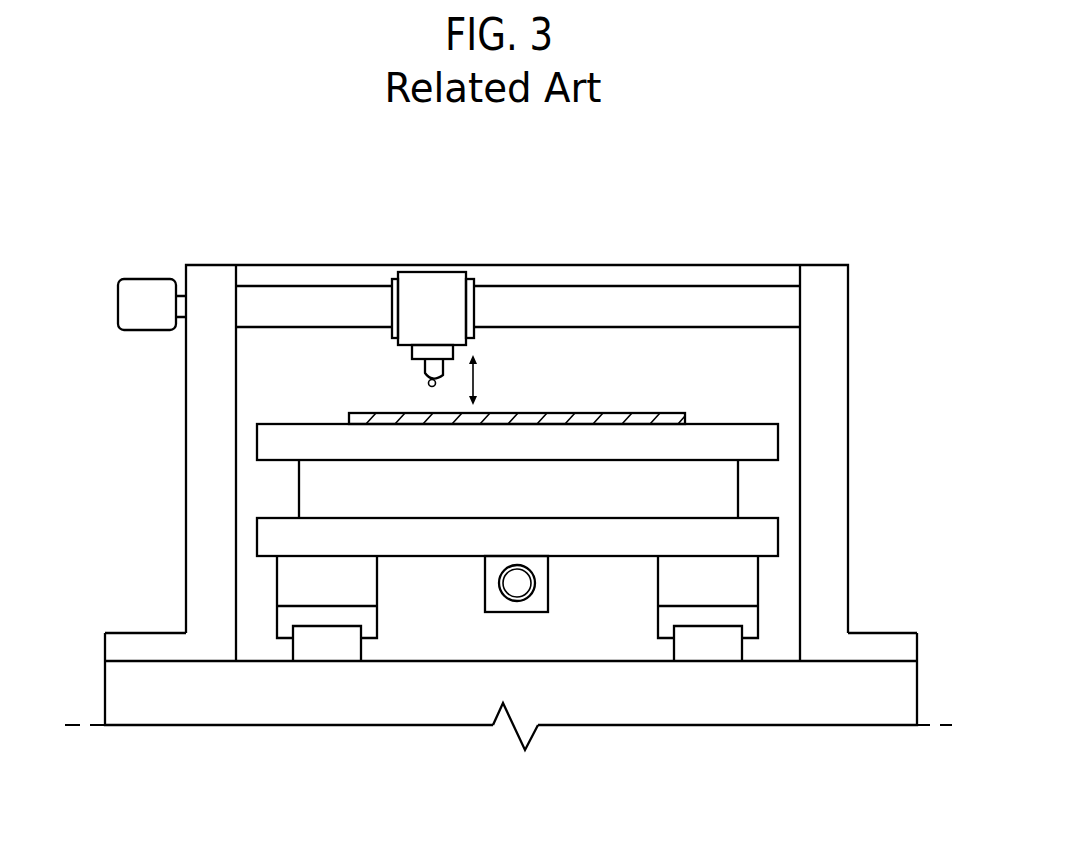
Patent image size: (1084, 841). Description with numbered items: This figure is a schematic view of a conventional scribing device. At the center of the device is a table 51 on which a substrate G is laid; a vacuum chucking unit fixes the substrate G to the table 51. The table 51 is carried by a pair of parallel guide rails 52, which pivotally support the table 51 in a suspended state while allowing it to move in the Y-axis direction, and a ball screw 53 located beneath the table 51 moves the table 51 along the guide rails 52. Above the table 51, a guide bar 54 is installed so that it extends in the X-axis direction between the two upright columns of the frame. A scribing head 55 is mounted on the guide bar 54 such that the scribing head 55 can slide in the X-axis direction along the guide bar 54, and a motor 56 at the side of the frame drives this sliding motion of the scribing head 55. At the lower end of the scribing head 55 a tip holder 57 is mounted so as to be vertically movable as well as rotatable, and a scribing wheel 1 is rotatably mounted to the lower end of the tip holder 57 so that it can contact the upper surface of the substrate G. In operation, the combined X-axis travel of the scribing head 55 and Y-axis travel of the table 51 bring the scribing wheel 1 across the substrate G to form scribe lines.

The scribing wheel 1 is at (428, 387).
The table 51 is at (736, 445).
The guide rails 52 is at (327, 648).
The ball screw 53 is at (518, 588).
The guide bar 54 is at (708, 297).
The scribing head 55 is at (432, 293).
The motor 56 is at (146, 298).
The tip holder 57 is at (426, 371).
The substrate G is at (574, 413).